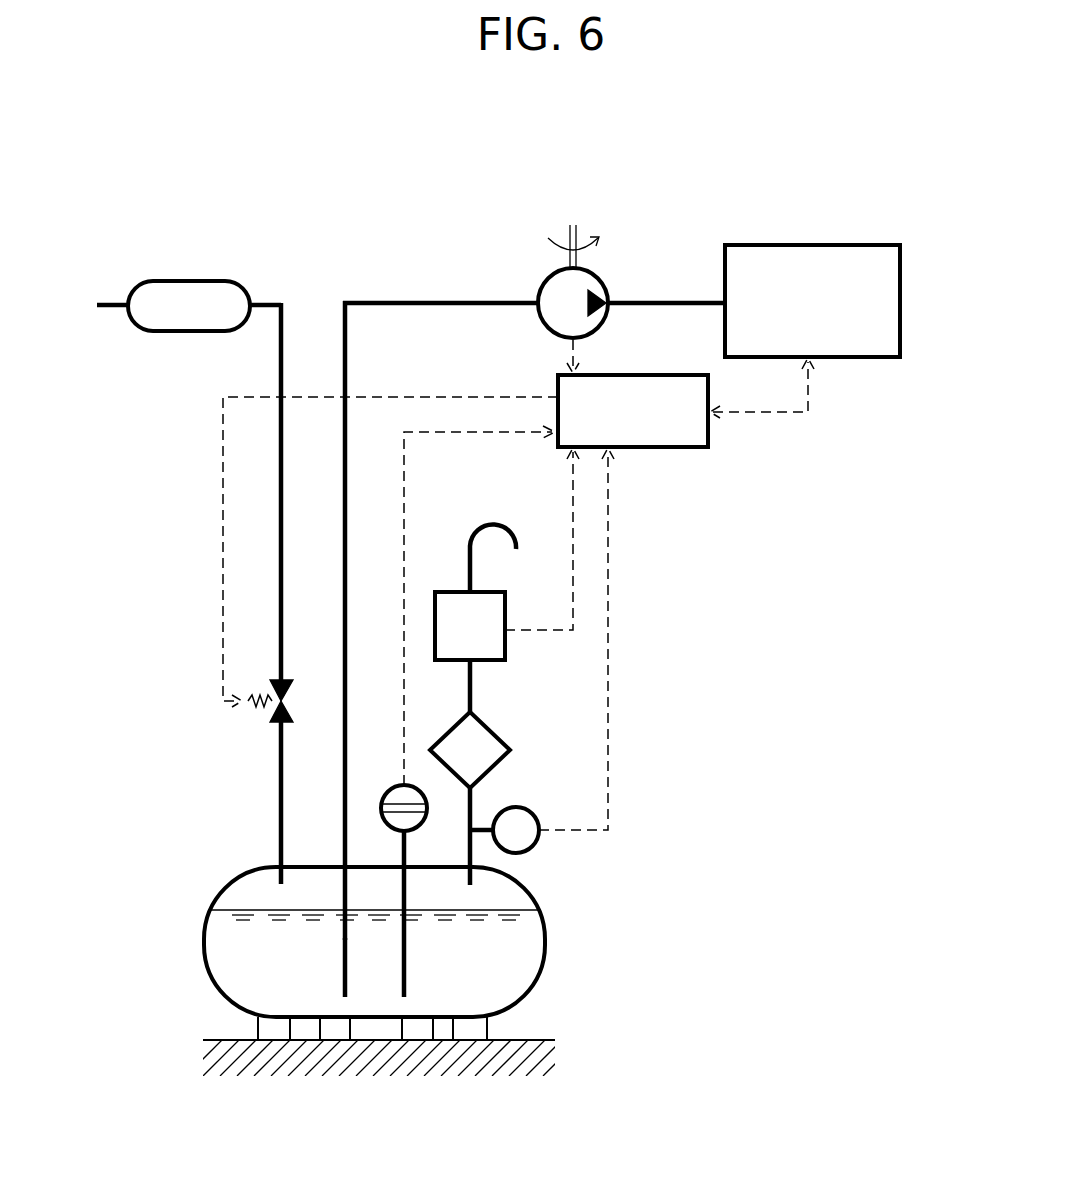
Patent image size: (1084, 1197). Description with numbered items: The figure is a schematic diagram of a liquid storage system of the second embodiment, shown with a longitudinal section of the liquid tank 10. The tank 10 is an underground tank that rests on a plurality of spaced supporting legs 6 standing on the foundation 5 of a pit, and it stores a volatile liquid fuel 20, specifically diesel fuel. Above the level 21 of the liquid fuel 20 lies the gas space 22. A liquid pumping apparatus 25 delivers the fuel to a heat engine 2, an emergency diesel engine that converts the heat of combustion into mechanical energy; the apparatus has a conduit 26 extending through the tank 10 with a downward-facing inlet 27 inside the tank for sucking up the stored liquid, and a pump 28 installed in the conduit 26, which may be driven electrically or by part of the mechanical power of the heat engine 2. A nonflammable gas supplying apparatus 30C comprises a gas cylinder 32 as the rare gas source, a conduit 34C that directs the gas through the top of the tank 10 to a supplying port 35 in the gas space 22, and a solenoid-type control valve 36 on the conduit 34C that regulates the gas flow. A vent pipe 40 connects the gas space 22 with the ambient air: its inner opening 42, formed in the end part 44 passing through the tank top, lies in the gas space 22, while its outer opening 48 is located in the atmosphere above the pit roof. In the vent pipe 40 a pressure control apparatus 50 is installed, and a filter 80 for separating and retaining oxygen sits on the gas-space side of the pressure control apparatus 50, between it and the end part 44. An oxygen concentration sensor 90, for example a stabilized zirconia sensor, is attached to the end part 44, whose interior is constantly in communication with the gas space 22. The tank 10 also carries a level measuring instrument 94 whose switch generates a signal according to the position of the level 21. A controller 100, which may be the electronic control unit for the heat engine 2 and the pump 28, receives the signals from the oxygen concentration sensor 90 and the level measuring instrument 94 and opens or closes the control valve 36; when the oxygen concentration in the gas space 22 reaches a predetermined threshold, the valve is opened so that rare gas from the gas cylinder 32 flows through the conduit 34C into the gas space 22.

The heat engine 2 is at (793, 254).
The foundation 5 is at (541, 1050).
The supporting legs 6 is at (258, 1027).
The liquid tank 10 is at (562, 946).
The liquid fuel 20 is at (362, 957).
The level 21 is at (312, 910).
The gas space 22 is at (372, 882).
The liquid pumping apparatus 25 is at (410, 270).
The conduit 26 is at (348, 348).
The inlet 27 is at (342, 996).
The pump 28 is at (550, 328).
The nonflammable gas supplying apparatus 30C is at (244, 252).
The gas cylinder 32 is at (182, 292).
The conduit 34C is at (279, 821).
The supplying port 35 is at (281, 883).
The control valve 36 is at (293, 701).
The vent pipe 40 is at (478, 517).
The opening 42 is at (468, 885).
The end part 44 is at (468, 846).
The opening 48 is at (518, 548).
The pressure control apparatus 50 is at (488, 604).
The filter 80 is at (488, 736).
The oxygen concentration sensor 90 is at (528, 838).
The level measuring instrument 94 is at (394, 792).
The controller 100 is at (683, 438).